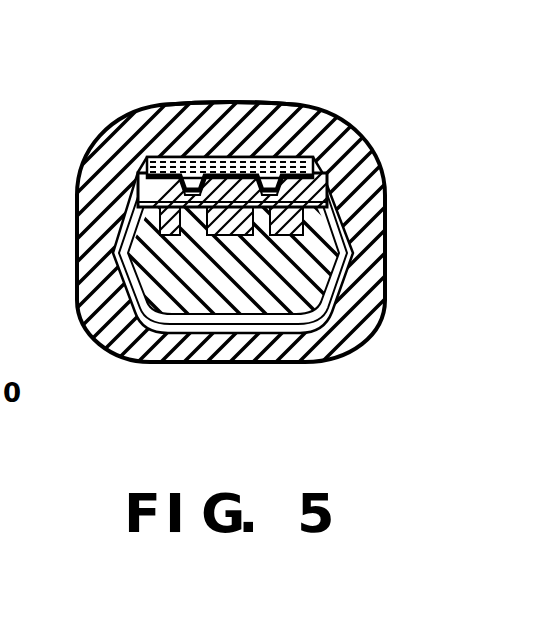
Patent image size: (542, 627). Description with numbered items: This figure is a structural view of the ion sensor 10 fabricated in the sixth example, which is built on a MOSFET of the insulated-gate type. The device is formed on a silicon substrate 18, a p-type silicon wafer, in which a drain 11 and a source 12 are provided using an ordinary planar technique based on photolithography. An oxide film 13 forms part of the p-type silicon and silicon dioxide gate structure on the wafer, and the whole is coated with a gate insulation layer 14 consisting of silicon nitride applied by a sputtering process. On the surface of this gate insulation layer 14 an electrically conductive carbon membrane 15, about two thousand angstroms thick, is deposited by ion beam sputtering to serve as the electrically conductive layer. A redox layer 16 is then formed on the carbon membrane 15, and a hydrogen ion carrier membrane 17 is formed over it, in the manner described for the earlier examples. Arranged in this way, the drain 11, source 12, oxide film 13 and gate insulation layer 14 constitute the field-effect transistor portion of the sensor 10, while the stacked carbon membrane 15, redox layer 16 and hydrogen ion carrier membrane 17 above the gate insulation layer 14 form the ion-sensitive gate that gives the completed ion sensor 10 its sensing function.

The transducer assembly 10 is at (222, 88).
The drain 11 is at (200, 197).
The source 12 is at (142, 204).
The oxide film 13 is at (160, 206).
The gate insulation layer 14 is at (306, 130).
The electrically conductive carbon membrane 15 is at (190, 157).
The redox layer 16 is at (243, 157).
The hydrogen ion carrier membrane 17 is at (158, 112).
The silicon substrate 18 is at (270, 303).